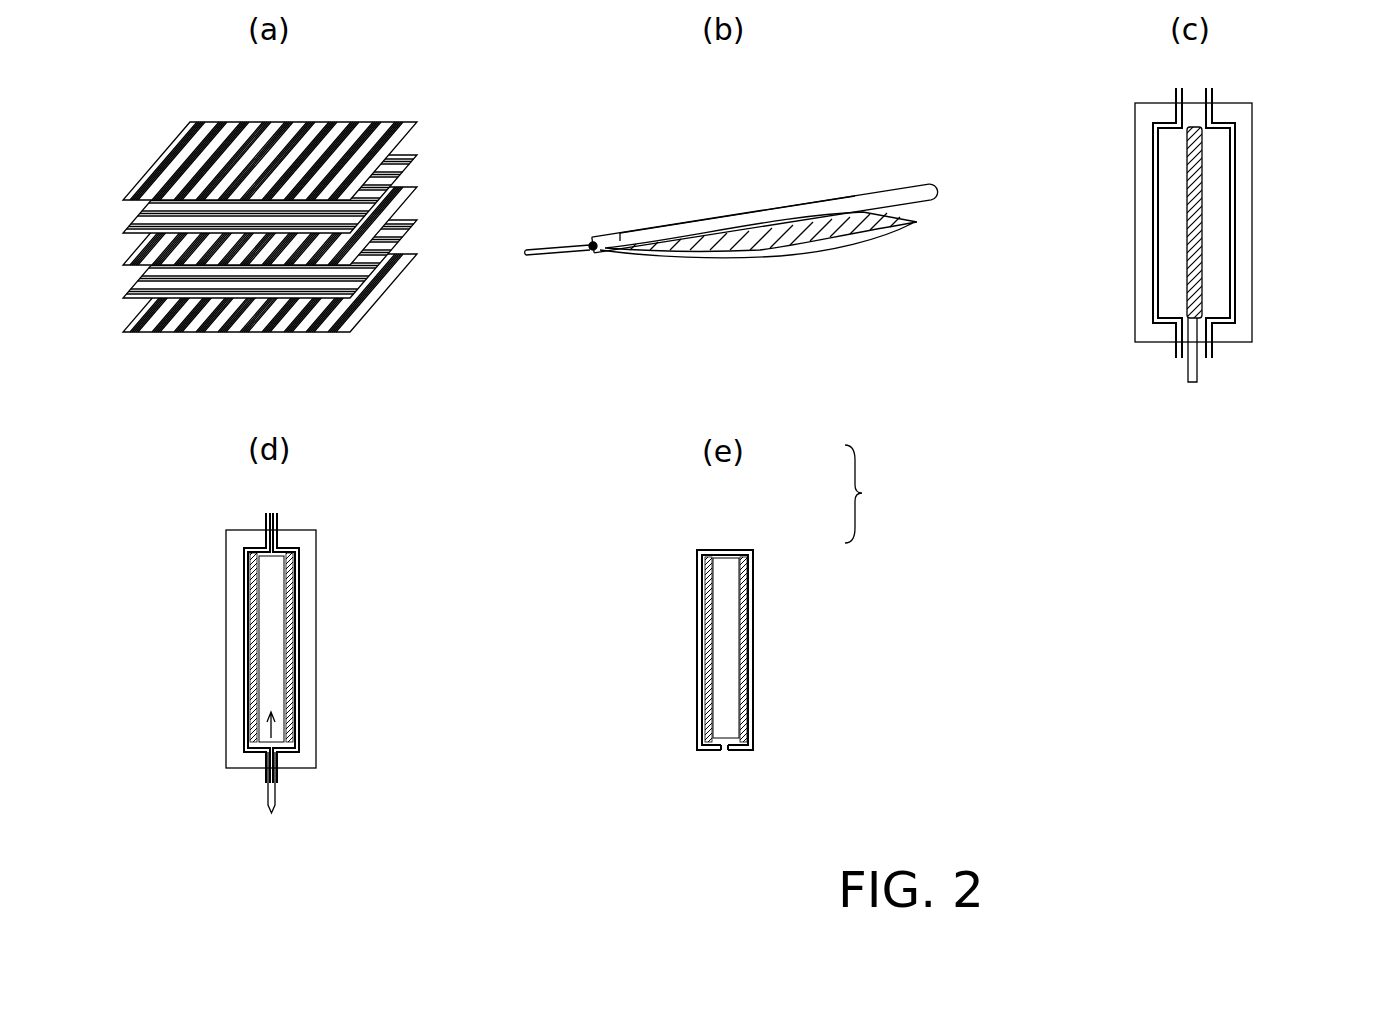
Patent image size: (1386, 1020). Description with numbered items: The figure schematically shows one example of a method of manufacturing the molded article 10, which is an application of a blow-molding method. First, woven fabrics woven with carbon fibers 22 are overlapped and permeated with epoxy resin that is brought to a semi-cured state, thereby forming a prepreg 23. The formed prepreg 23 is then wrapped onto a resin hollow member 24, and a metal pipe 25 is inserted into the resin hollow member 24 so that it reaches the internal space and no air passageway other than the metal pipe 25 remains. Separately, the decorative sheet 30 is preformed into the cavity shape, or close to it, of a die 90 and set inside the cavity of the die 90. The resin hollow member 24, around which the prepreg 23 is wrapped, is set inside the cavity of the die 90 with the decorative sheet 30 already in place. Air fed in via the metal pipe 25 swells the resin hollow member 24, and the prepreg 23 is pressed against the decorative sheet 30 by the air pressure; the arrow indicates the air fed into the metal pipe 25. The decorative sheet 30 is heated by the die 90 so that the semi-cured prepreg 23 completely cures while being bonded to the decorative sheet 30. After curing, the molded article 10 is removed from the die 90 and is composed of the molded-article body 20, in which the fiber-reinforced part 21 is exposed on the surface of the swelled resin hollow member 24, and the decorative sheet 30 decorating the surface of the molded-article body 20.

The carbon fibers 22 is at (357, 122).
The resin hollow member 24 is at (896, 190).
The metal pipe 25 is at (552, 247).
The prepreg 23 is at (912, 215).
The decorative sheet 30 is at (1166, 126).
The die 90 is at (1242, 142).
The fiber-reinforced part 21 is at (745, 585).
The molded-article body 20 is at (878, 494).
The molded article 10 is at (782, 650).